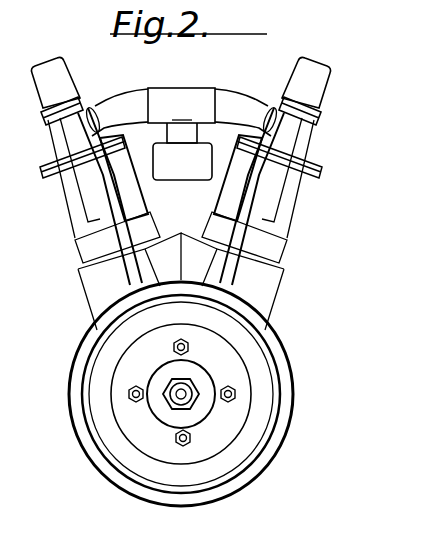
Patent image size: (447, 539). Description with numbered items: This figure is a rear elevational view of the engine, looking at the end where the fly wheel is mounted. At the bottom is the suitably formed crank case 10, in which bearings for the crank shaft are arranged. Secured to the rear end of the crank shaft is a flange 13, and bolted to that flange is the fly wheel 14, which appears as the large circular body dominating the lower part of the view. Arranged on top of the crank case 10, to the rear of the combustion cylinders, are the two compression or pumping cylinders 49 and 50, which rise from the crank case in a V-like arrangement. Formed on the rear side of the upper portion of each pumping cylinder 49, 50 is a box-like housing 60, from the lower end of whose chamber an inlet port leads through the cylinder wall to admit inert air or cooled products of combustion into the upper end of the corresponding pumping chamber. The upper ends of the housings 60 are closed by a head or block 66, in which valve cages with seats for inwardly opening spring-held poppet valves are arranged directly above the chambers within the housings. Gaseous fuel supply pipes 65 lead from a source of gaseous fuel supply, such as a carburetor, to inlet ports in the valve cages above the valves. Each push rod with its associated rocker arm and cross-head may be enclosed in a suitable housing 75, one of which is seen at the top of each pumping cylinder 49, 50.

The crank case 10 is at (82, 423).
The flange 13 is at (207, 385).
The fly wheel 14 is at (256, 418).
The compression or pumping cylinder 49 is at (72, 198).
The compression or pumping cylinder 50 is at (286, 212).
The box-like housing 60 is at (254, 188).
The gaseous fuel supply pipe 65 is at (128, 105).
The head or block 66 is at (62, 147).
The housing 75 is at (50, 79).